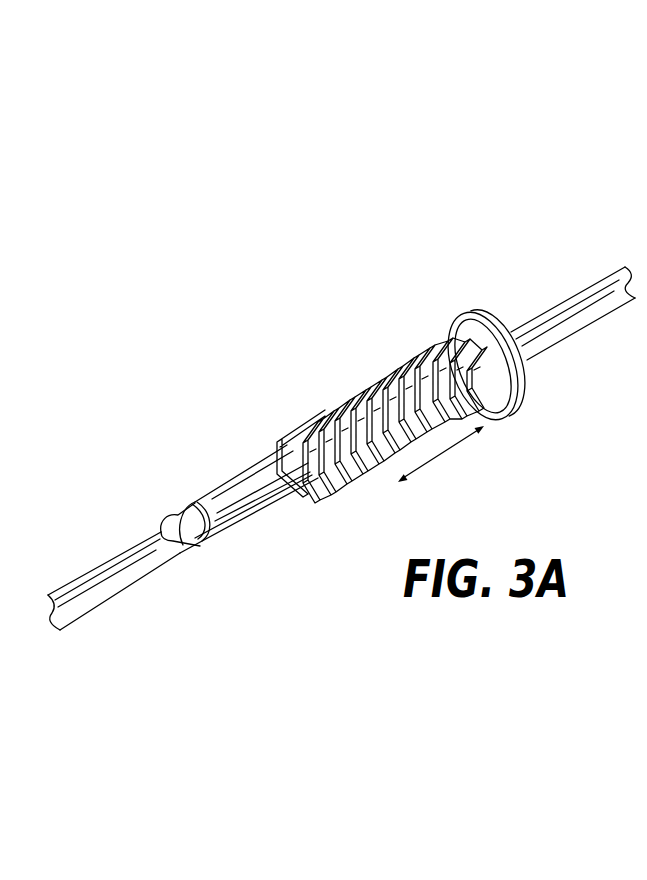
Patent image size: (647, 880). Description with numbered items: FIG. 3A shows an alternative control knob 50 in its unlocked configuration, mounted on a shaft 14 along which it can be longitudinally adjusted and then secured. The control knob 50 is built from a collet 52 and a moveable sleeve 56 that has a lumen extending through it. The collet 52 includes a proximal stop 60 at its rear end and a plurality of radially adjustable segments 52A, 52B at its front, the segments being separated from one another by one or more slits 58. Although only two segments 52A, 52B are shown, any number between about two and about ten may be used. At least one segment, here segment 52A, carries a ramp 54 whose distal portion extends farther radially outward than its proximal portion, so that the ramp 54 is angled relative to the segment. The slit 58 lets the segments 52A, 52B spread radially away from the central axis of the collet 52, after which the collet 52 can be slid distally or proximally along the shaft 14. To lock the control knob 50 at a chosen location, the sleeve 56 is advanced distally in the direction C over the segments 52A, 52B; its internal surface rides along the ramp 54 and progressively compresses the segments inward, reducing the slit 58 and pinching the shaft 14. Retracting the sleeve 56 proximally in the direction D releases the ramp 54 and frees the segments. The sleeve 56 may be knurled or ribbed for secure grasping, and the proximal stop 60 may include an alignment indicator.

The shaft 14 is at (74, 581).
The control knob 50 is at (290, 174).
The collet 52 is at (196, 407).
The segment 52A is at (195, 504).
The segment 52B is at (218, 547).
The ramp 54 is at (212, 493).
The sleeve 56 is at (366, 392).
The slit 58 is at (254, 517).
The proximal stop 60 is at (490, 310).